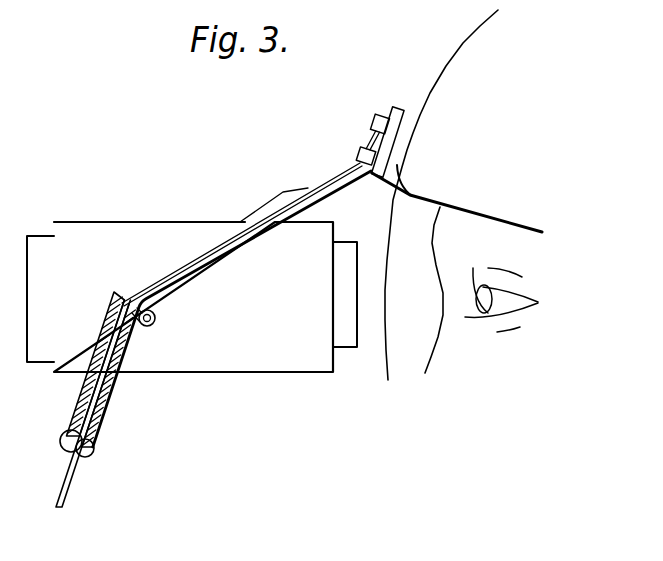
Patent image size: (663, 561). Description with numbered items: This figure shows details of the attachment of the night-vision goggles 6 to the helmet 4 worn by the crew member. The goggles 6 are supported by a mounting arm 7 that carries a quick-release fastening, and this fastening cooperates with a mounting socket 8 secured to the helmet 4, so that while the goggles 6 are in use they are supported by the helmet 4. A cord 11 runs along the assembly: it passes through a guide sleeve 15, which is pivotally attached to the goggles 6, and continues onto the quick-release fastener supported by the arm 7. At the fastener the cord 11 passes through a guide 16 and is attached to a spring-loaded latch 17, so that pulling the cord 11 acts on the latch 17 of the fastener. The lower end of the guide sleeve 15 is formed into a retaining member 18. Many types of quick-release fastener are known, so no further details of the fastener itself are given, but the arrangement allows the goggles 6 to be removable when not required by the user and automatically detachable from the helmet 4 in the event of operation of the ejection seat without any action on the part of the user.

The helmet 4 is at (483, 75).
The night-vision goggles 6 is at (138, 238).
The mounting arm 7 is at (275, 205).
The mounting socket 8 is at (408, 122).
The cord 11 is at (63, 487).
The guide sleeve 15 is at (103, 398).
The guide 16 is at (362, 159).
The spring-loaded latch 17 is at (375, 123).
The retaining member 18 is at (92, 450).